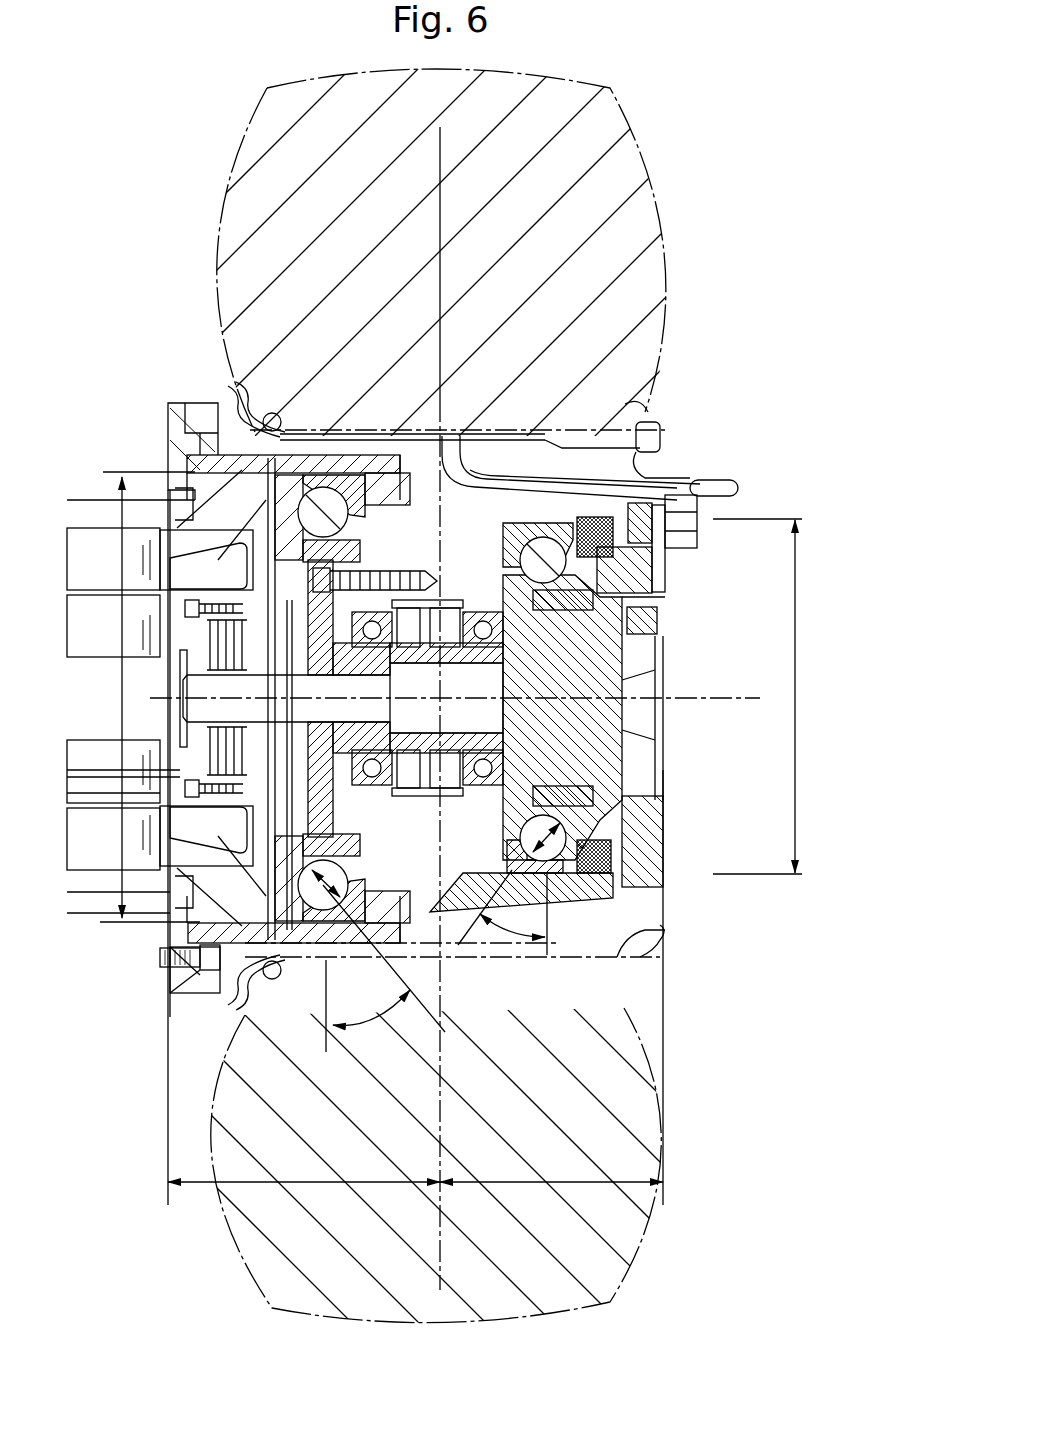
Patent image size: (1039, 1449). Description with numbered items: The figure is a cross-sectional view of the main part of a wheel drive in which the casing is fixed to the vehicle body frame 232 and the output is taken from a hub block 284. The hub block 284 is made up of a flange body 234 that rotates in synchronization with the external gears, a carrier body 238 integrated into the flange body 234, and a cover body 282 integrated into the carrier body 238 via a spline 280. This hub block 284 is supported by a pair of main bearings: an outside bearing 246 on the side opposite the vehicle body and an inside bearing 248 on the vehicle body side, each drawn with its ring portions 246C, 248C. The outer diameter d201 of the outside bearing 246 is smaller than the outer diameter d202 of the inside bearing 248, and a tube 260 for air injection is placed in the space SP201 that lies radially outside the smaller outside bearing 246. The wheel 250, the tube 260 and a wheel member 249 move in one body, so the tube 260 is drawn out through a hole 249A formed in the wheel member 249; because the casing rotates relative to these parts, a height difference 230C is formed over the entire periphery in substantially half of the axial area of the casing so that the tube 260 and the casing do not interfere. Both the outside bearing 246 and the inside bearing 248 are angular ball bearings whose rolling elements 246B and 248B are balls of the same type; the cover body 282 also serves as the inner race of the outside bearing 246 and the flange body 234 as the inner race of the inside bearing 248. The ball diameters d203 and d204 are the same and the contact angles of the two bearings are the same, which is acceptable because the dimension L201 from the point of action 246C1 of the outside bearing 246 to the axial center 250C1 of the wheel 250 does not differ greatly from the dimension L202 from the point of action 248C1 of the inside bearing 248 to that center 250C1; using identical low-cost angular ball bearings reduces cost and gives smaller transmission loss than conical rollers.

The wheel 250 is at (622, 158).
The center in the axial direction of the wheel 250C1 is at (440, 1220).
The height difference 230C is at (397, 440).
The space SP201 is at (590, 456).
The tube 260 is at (637, 488).
The wheel member 249 is at (645, 435).
The hole 249A is at (702, 486).
The clip 248C is at (237, 412).
The vehicle body frame 232 is at (173, 416).
The flange body 234 is at (186, 926).
The inside bearing 248 is at (230, 652).
The rolling element 248B is at (308, 508).
The point of action of the inside bearing 248C1 is at (170, 697).
The outside bearing 246 is at (535, 623).
The rolling element 246B is at (545, 580).
The bearing outer ring 246C is at (548, 518).
The point of action of the outside bearing 246C1 is at (663, 692).
The cover body 282 is at (637, 566).
The spline 280 is at (620, 601).
The hub block 284 is at (670, 623).
The carrier body 238 is at (622, 739).
The outer diameter of the outside bearing d201 is at (797, 700).
The outer diameter of the inside bearing d202 is at (122, 712).
The diameter of the rolling element of the outside bearing d203 is at (640, 868).
The diameter of the rolling element of the inside bearing d204 is at (259, 952).
The dimension from the point of action of the outside bearing to the wheel center L201 is at (551, 987).
The dimension from the point of action of the inside bearing to the wheel center L202 is at (304, 847).